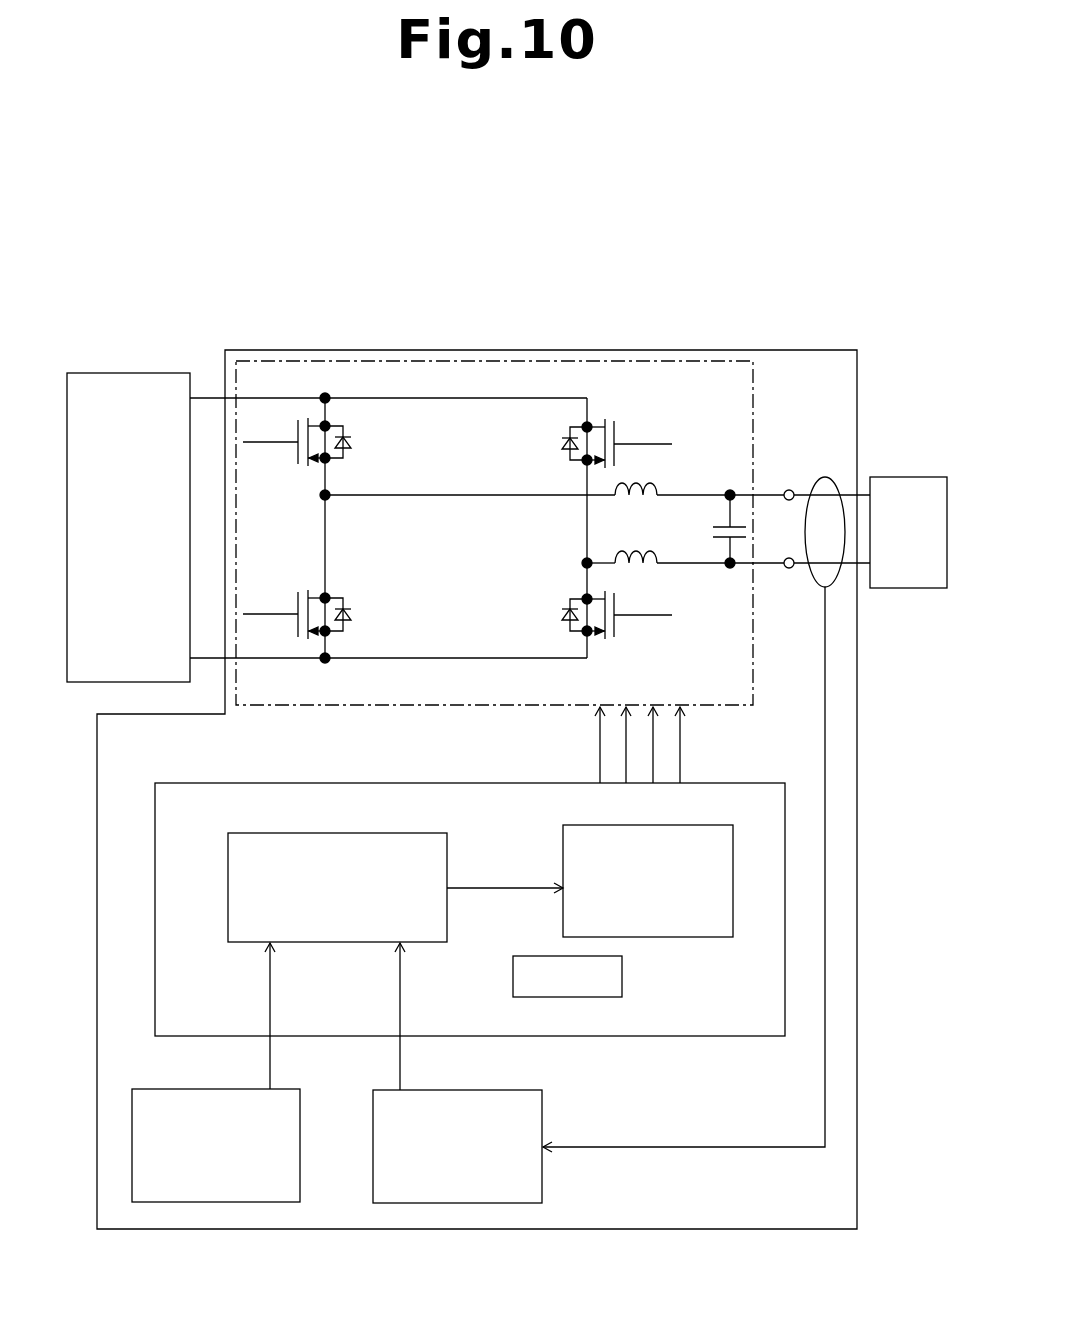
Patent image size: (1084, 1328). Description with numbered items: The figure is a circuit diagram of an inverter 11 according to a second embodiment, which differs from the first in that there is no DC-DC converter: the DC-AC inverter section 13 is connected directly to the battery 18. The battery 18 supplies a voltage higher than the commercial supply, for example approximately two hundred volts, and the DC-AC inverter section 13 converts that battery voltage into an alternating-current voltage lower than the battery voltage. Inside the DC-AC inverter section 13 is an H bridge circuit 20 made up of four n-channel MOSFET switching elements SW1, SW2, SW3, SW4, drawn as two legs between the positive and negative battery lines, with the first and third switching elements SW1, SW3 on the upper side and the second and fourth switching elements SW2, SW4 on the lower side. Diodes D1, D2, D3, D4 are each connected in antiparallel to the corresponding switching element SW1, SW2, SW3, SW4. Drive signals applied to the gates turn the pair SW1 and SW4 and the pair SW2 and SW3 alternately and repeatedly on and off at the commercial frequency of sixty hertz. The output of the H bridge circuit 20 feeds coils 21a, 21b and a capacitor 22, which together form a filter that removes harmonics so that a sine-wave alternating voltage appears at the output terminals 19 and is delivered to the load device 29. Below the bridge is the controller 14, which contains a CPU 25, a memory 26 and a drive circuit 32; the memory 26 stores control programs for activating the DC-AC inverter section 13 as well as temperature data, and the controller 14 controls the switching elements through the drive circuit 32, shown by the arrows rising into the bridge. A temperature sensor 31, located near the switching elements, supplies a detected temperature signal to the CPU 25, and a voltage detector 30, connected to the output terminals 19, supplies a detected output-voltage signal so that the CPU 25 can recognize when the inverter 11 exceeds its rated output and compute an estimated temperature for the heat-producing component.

The inverter 11 is at (608, 326).
The DC-AC inverter section 13 is at (272, 358).
The controller 14 is at (470, 906).
The battery 18 is at (108, 372).
The output terminals 19 is at (790, 488).
The H bridge circuit 20 is at (433, 495).
The coil 21a is at (660, 488).
The coil 21b is at (660, 555).
The capacitor 22 is at (711, 540).
The CPU 25 is at (300, 833).
The memory 26 is at (587, 998).
The load device 29 is at (900, 590).
The voltage detector 30 is at (544, 1110).
The temperature sensor 31 is at (300, 1130).
The drive circuit 32 is at (700, 938).
The first switching element SW1 is at (304, 466).
The second switching element SW2 is at (306, 590).
The third switching element SW3 is at (608, 418).
The fourth switching element SW4 is at (597, 644).
The diode D1 is at (354, 442).
The diode D2 is at (354, 614).
The diode D3 is at (559, 441).
The diode D4 is at (559, 612).